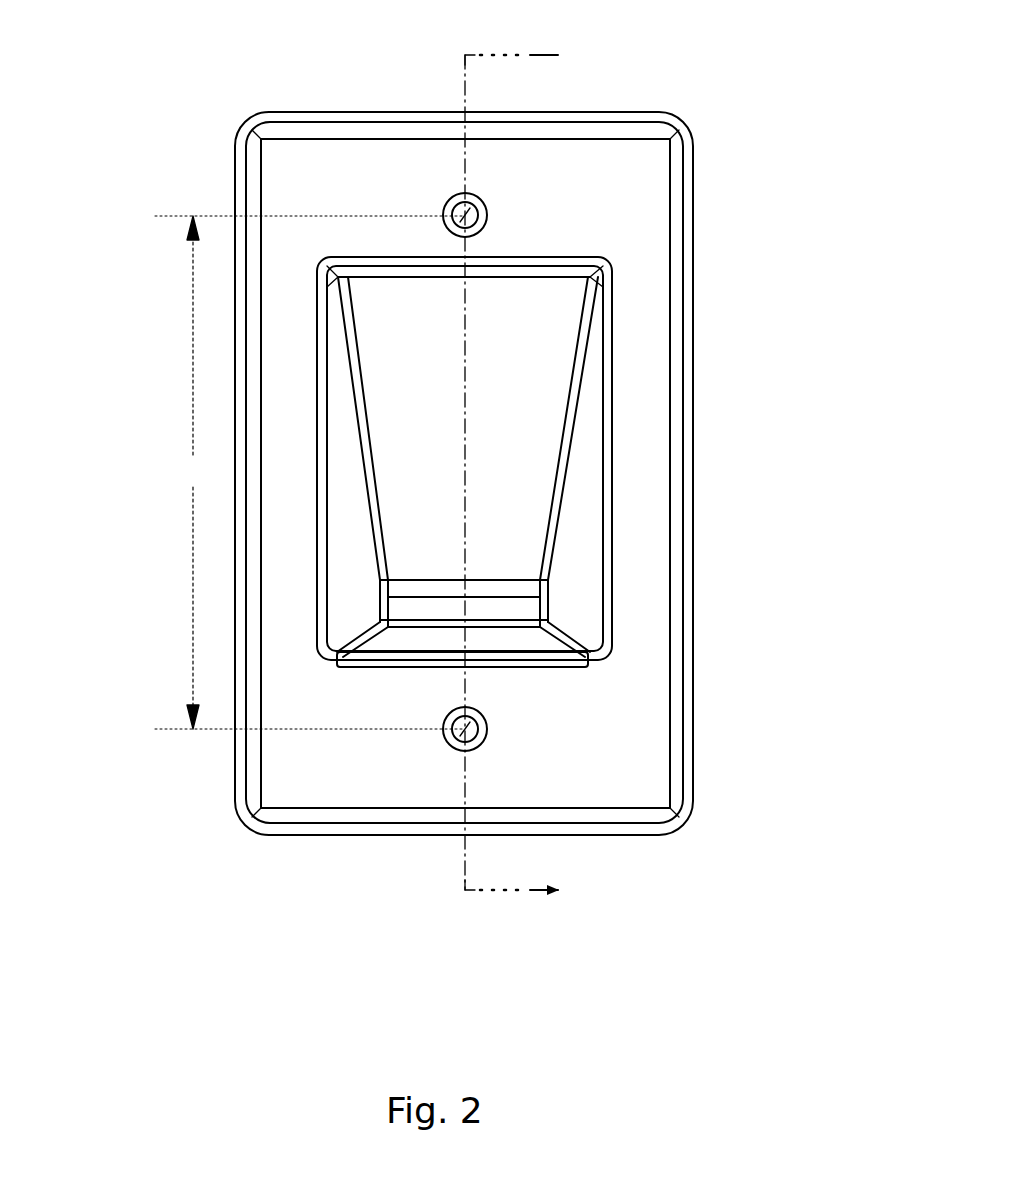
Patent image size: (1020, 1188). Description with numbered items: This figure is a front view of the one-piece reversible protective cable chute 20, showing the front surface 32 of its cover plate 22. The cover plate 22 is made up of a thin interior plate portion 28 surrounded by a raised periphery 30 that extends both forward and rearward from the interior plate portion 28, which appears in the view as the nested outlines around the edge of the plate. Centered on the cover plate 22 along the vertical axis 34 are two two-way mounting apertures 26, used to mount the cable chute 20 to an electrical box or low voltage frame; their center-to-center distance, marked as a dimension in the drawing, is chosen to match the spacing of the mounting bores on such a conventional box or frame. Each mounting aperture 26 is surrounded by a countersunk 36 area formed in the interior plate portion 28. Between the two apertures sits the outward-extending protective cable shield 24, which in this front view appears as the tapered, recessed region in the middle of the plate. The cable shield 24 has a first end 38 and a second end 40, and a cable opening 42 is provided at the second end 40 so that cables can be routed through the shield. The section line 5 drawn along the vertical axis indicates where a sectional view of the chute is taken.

The protective cable chute 20 is at (145, 188).
The cover plate 22 is at (614, 112).
The protective cable shield 24 is at (468, 428).
The two-way mounting apertures 26 is at (476, 204).
The interior plate portion 28 is at (465, 473).
The raised periphery 30 is at (690, 433).
The front surface 32 is at (650, 292).
The vertical axis 34 is at (466, 343).
The countersunk area 36 is at (453, 205).
The first end 38 is at (513, 258).
The second end 40 is at (500, 668).
The cable opening 42 is at (503, 647).
The section line 5- 5 is at (511, 473).